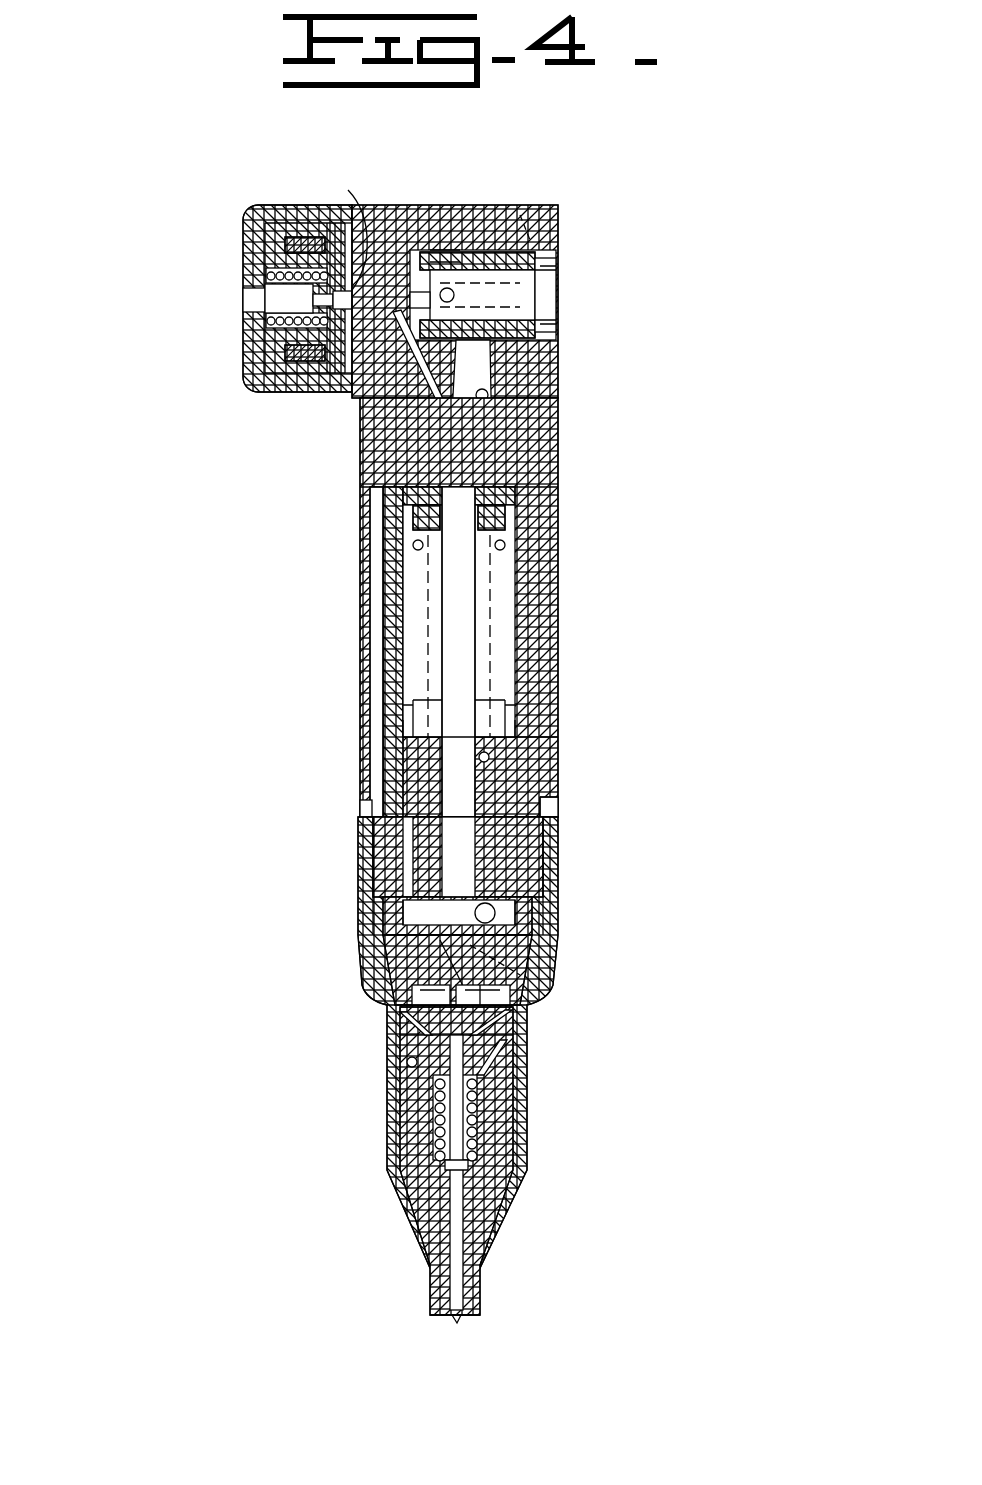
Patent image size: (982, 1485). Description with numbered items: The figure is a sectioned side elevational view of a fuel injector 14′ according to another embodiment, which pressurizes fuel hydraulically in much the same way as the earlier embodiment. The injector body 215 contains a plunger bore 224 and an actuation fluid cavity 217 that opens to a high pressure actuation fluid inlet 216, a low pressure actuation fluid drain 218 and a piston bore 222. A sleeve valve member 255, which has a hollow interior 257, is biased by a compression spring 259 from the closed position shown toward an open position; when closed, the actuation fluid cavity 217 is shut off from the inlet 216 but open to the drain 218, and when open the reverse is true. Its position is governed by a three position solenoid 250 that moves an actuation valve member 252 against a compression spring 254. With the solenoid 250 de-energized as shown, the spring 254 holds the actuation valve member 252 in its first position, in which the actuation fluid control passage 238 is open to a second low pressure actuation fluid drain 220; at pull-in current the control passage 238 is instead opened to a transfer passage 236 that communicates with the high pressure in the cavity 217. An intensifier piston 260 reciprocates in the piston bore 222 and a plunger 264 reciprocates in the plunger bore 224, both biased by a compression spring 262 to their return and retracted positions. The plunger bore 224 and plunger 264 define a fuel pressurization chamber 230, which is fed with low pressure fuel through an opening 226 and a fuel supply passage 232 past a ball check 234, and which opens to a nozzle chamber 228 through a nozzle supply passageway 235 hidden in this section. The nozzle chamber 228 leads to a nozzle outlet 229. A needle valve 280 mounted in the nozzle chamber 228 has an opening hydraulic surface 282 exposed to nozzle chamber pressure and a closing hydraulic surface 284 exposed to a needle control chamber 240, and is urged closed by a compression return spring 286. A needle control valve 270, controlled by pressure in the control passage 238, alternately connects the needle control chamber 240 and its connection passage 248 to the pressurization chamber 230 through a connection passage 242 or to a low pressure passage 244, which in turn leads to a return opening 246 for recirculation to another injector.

The fuel injector 14′ is at (148, 494).
The injector body 215 is at (360, 540).
The high pressure actuation fluid inlet 216 is at (556, 311).
The actuation fluid cavity 217 is at (500, 388).
The low pressure actuation fluid drain 218 is at (545, 207).
The second low pressure actuation fluid drain 220 is at (400, 207).
The piston bore 222 is at (520, 580).
The plunger bore 224 is at (490, 758).
The opening 226 is at (552, 812).
The nozzle chamber 228 is at (520, 1170).
The nozzle outlet 229 is at (460, 1323).
The fuel pressurization chamber 230 is at (490, 848).
The fuel supply passage 232 is at (552, 880).
The ball check 234 is at (548, 925).
The nozzle supply passageway 235 is at (550, 968).
The transfer passage 236 is at (436, 250).
The actuation fluid control passage 238 is at (398, 425).
The needle control chamber 240 is at (520, 1040).
The connection passage 242 is at (395, 905).
The low pressure passage 244 is at (520, 1016).
The return opening 246 is at (555, 940).
The connection passage 248 is at (395, 1005).
The three position solenoid 250 is at (270, 398).
The actuation valve member 252 is at (372, 240).
The compression spring 254 is at (330, 306).
The sleeve valve member 255 is at (556, 345).
The hollow interior 257 is at (470, 290).
The compression spring 259 is at (542, 292).
The intensifier piston 260 is at (530, 515).
The compression spring 262 is at (508, 704).
The plunger 264 is at (490, 650).
The needle control valve 270 is at (395, 1034).
The needle valve 280 is at (484, 1262).
The opening hydraulic surface 282 is at (392, 1200).
The closing hydraulic surface 284 is at (400, 1055).
The compression return spring 286 is at (528, 1110).